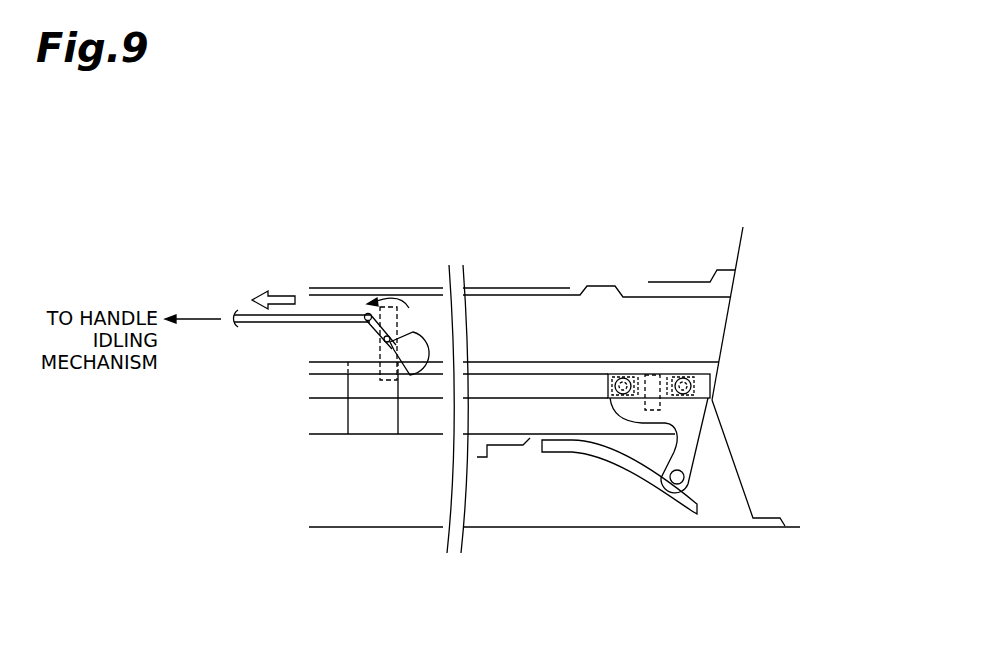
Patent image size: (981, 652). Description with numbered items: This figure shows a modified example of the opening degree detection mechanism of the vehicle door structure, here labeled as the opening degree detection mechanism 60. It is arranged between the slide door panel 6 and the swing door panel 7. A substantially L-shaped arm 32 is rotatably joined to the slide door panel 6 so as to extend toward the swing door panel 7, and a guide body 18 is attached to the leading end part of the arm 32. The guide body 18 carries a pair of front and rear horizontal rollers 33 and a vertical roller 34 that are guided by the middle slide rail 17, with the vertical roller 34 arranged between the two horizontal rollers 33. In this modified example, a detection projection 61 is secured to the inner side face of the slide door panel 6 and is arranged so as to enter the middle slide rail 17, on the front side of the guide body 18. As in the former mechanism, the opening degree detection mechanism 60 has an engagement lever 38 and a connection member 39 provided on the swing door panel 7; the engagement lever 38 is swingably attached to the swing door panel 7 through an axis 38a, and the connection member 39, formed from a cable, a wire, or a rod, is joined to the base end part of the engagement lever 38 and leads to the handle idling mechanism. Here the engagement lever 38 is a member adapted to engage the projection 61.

The slide door panel 6 is at (380, 508).
The swing door panel 7 is at (512, 305).
The middle slide rail 17 is at (515, 383).
The guide body 18 is at (660, 363).
The arm 32 is at (693, 457).
The horizontal rollers 33 is at (607, 381).
The vertical roller 34 is at (665, 398).
The engagement lever 38 is at (410, 337).
The axis 38a is at (398, 305).
The connection member 39 is at (258, 325).
The opening degree detection mechanism 60 is at (345, 307).
The detection projection 61 is at (365, 425).